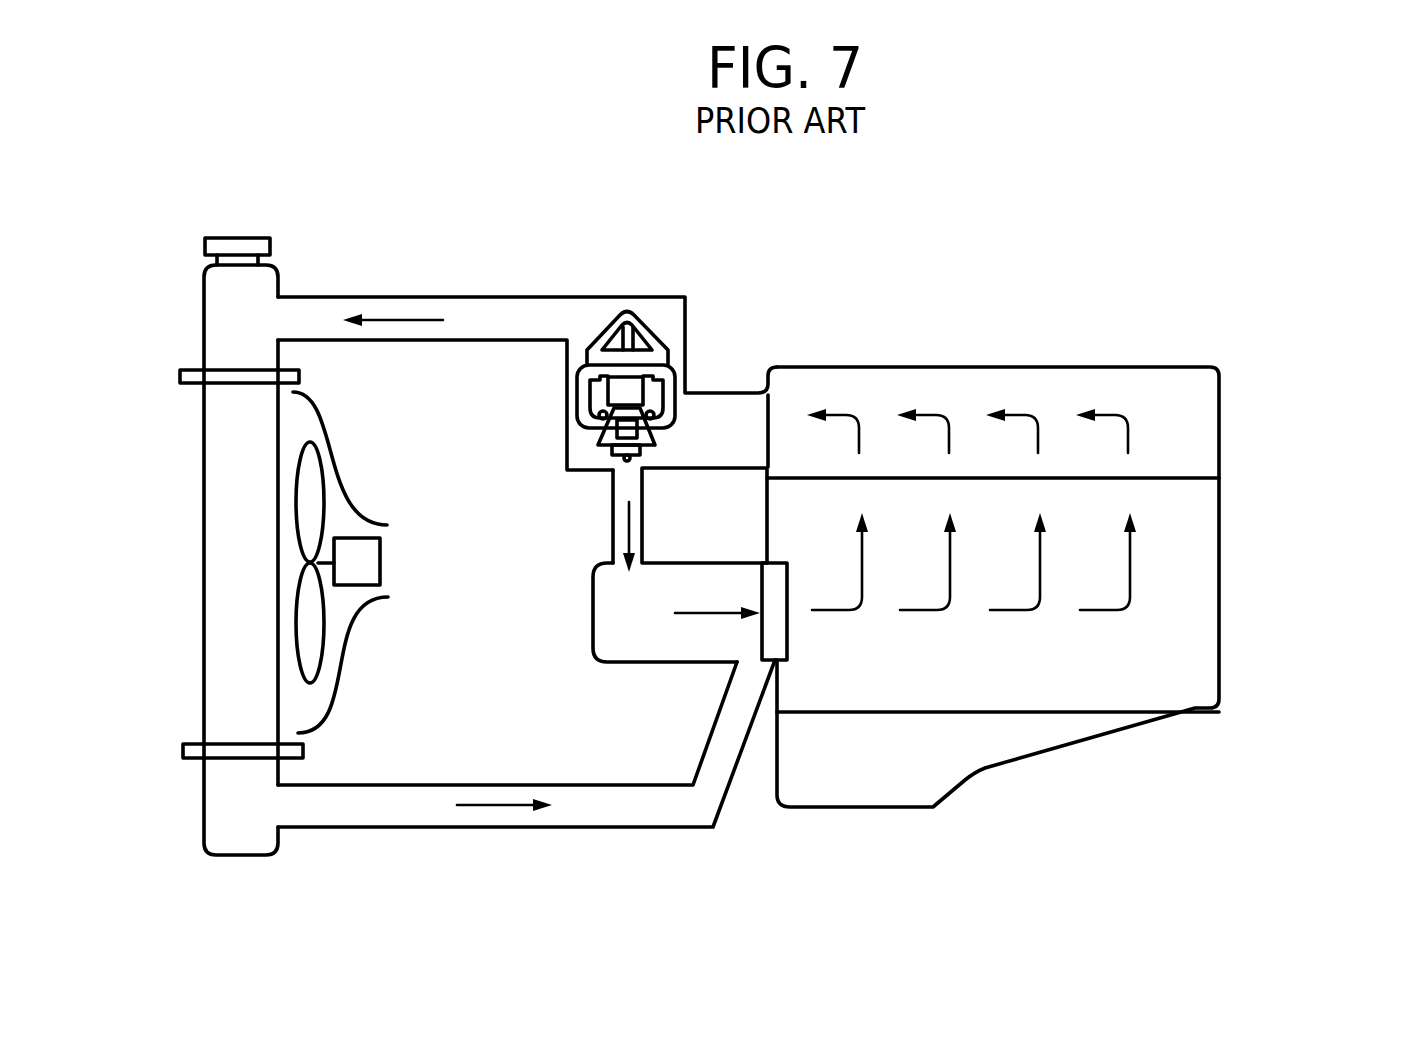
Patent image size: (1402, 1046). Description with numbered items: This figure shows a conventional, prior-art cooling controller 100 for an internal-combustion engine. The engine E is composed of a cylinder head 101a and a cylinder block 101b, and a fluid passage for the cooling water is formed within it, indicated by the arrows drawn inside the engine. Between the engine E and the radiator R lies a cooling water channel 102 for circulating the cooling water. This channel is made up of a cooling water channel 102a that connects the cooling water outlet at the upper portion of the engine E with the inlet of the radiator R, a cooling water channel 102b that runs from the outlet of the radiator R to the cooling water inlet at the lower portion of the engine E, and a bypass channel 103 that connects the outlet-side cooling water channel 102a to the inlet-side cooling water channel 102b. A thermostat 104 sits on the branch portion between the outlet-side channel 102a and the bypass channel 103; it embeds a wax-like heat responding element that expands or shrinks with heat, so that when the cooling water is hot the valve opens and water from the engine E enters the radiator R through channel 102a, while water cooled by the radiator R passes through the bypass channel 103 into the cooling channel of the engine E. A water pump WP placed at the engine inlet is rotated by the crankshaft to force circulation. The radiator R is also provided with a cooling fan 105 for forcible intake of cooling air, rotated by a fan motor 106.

The cooling controller 100 is at (729, 268).
The radiator R is at (219, 560).
The cooling water channel 102 is at (482, 286).
The cooling water channel 102a is at (397, 297).
The cooling water channel 102b is at (500, 820).
The bypass channel 103 is at (613, 503).
The thermostat 104 is at (645, 312).
The cooling fan 105 is at (322, 490).
The fan motor 106 is at (380, 569).
The water pump WP is at (752, 642).
The engine E is at (997, 352).
The cylinder head 101a is at (1200, 428).
The cylinder block 101b is at (1210, 628).